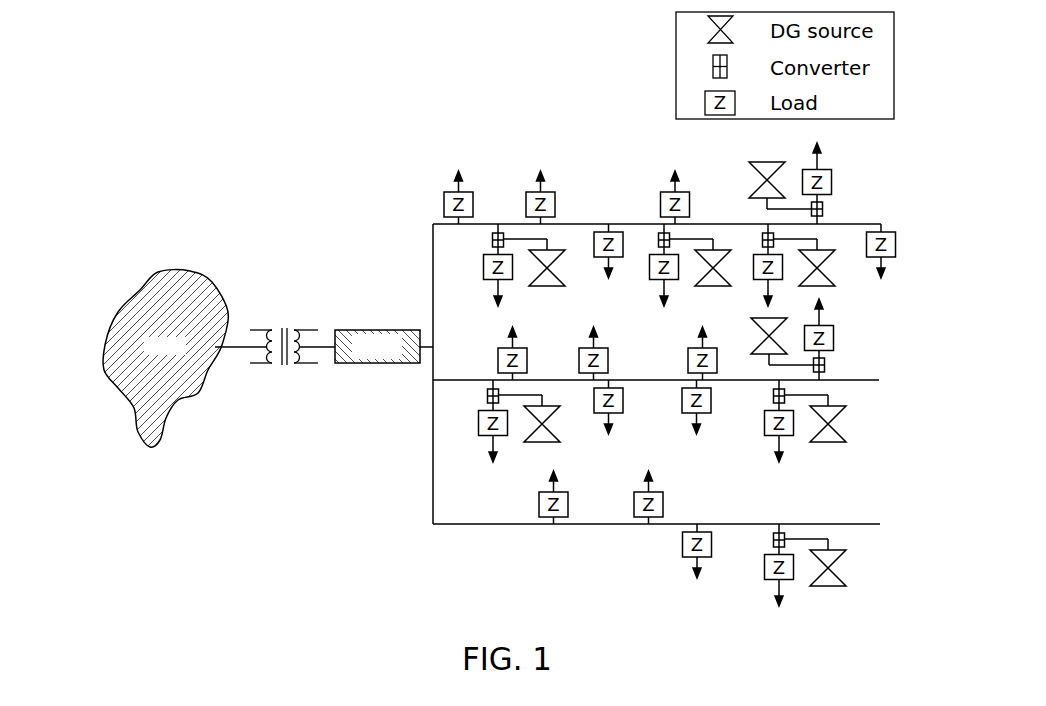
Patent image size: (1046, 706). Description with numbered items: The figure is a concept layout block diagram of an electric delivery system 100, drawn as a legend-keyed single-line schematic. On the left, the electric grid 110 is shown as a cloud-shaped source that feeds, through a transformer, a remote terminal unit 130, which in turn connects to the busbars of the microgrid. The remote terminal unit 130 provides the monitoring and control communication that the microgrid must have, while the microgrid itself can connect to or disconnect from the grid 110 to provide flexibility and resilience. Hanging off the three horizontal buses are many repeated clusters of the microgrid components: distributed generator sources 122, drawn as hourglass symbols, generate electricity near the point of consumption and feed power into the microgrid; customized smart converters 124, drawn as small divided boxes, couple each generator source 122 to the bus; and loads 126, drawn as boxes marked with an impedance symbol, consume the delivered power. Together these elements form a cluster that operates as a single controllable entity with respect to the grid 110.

The electric delivery system 100 is at (362, 150).
The electric grid 110 is at (192, 255).
The remote terminal unit 130 is at (383, 317).
The distributed generator source 122 is at (853, 429).
The customized smart converter 124 is at (480, 398).
The load 126 is at (472, 440).